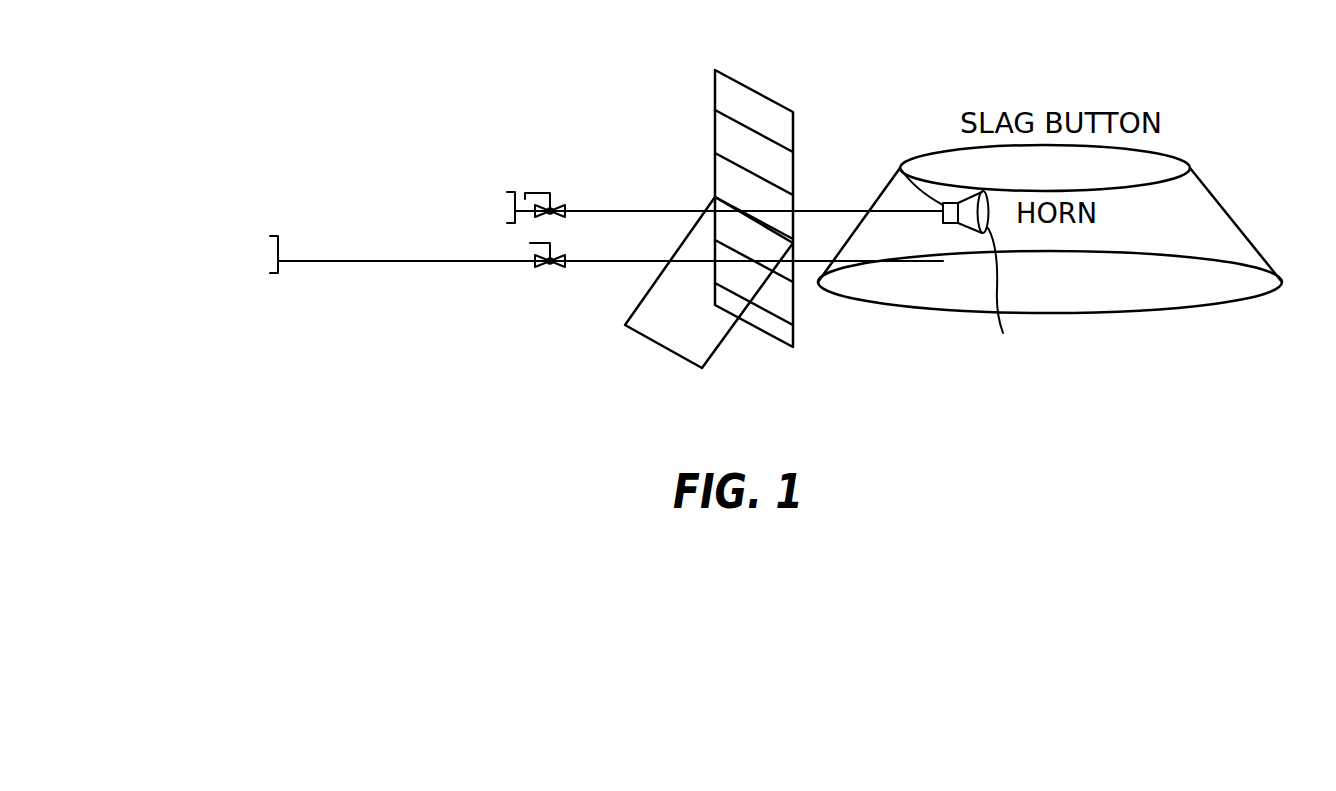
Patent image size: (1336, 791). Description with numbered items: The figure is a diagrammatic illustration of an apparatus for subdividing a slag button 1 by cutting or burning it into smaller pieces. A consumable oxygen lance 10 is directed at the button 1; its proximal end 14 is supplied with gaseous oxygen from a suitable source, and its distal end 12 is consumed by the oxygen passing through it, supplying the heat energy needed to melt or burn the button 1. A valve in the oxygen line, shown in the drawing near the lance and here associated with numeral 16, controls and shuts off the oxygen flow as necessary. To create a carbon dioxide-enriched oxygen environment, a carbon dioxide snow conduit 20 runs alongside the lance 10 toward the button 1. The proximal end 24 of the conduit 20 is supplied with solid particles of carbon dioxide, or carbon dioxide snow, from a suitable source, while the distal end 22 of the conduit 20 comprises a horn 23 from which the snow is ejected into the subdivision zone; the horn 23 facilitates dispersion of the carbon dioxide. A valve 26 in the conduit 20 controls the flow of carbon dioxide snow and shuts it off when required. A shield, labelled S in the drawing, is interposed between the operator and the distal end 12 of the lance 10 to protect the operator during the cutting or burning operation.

The button 1 is at (1258, 204).
The steel plate S is at (758, 81).
The consumable oxygen lance 10 is at (617, 266).
The distal end 12 is at (943, 261).
The proximal end 14 is at (491, 263).
The oxygen valve 16 is at (550, 267).
The carbon dioxide snow conduit 20 is at (648, 204).
The distal end 22 is at (898, 170).
The horn 23 is at (1017, 295).
The proximal end 24 is at (522, 198).
The valve 26 is at (560, 202).